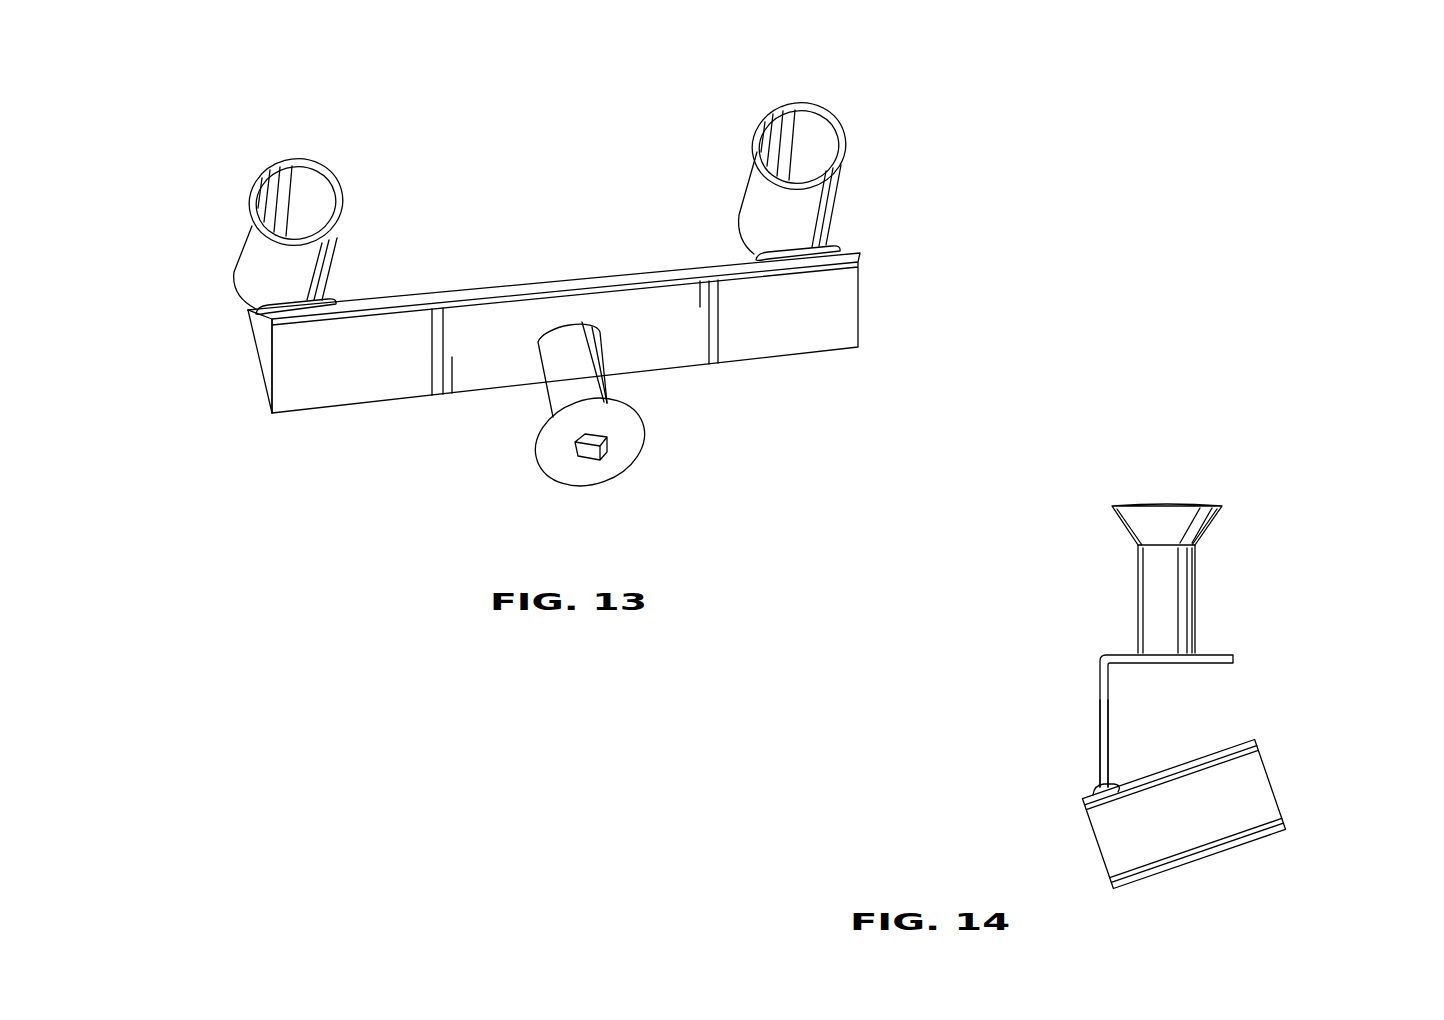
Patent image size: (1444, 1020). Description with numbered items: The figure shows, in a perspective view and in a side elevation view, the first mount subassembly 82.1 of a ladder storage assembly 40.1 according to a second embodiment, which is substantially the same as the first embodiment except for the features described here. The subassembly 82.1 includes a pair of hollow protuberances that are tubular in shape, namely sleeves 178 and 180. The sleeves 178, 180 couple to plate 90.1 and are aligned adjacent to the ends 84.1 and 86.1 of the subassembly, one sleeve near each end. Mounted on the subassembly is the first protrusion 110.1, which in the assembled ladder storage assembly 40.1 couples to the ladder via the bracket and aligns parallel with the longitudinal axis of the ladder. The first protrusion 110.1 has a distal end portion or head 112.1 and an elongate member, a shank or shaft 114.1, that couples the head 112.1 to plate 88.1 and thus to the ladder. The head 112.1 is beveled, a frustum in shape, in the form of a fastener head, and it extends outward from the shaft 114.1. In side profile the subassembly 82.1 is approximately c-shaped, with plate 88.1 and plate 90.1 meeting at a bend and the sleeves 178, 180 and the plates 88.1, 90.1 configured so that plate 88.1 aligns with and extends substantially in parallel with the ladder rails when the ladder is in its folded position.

In FIG. 13, the ladder storage assembly 40.1 is at (878, 97).
In FIG. 14, the ladder storage assembly 40.1 is at (1329, 486).
In FIG. 13, the first mount subassembly 82.1 is at (893, 204).
In FIG. 14, the first mount subassembly 82.1 is at (1048, 494).
In FIG. 13, the end of the subassembly 84.1 is at (580, 333).
In FIG. 13, the end of the subassembly 86.1 is at (247, 392).
In FIG. 13, the plate 88.1 is at (415, 372).
In FIG. 14, the plate 88.1 is at (1218, 652).
In FIG. 13, the plate 90.1 is at (266, 344).
In FIG. 14, the plate 90.1 is at (1100, 720).
In FIG. 13, the first protrusion 110.1 is at (644, 410).
In FIG. 14, the first protrusion 110.1 is at (1151, 539).
In FIG. 13, the head 112.1 is at (638, 420).
In FIG. 14, the head 112.1 is at (1132, 503).
In FIG. 13, the shaft 114.1 is at (584, 350).
In FIG. 14, the shaft 114.1 is at (1138, 601).
In FIG. 13, the sleeve 178 is at (751, 186).
In FIG. 14, the sleeve 178 is at (1205, 838).
In FIG. 13, the sleeve 180 is at (250, 237).